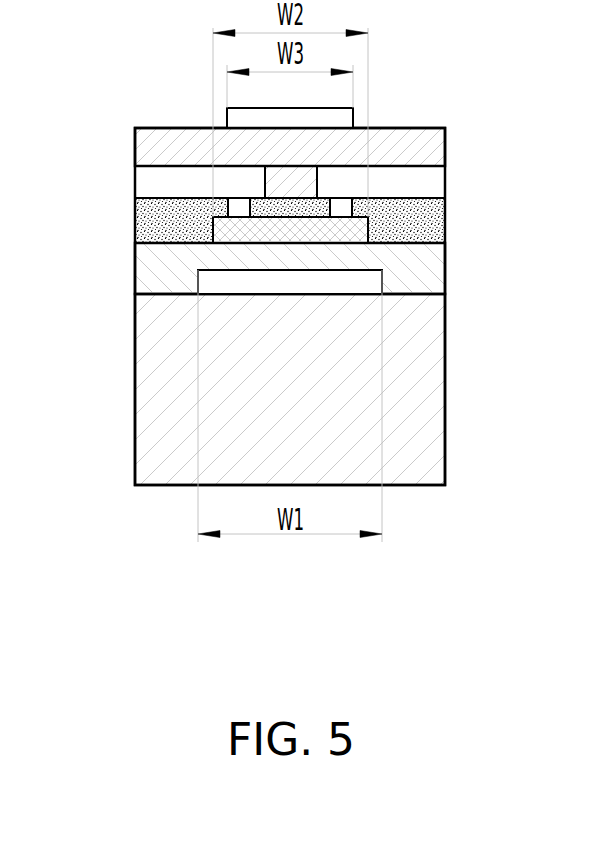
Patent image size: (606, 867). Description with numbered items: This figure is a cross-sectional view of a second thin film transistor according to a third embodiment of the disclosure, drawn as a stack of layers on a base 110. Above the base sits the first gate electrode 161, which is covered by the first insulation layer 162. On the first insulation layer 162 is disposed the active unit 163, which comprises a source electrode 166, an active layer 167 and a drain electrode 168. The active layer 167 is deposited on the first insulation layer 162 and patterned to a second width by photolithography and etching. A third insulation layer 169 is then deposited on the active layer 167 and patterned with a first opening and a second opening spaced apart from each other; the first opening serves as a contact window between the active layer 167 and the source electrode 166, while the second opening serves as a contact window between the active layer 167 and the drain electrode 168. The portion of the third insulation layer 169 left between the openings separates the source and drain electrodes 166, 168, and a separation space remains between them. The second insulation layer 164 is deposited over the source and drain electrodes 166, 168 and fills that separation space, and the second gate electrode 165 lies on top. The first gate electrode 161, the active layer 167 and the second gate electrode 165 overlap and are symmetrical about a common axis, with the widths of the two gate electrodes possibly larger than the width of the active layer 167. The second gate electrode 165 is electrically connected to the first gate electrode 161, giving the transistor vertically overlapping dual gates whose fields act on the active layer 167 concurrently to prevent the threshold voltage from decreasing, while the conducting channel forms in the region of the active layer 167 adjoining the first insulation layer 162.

The substrate 110 is at (428, 393).
The first gate electrode 161 is at (345, 285).
The first insulation layer 162 is at (390, 272).
The active unit 163 is at (527, 125).
The second insulation layer 164 is at (210, 135).
The second gate electrode 165 is at (337, 121).
The source electrode 166 is at (250, 185).
The active layer 167 is at (358, 237).
The drain electrode 168 is at (402, 185).
The third insulation layer 169 is at (275, 210).